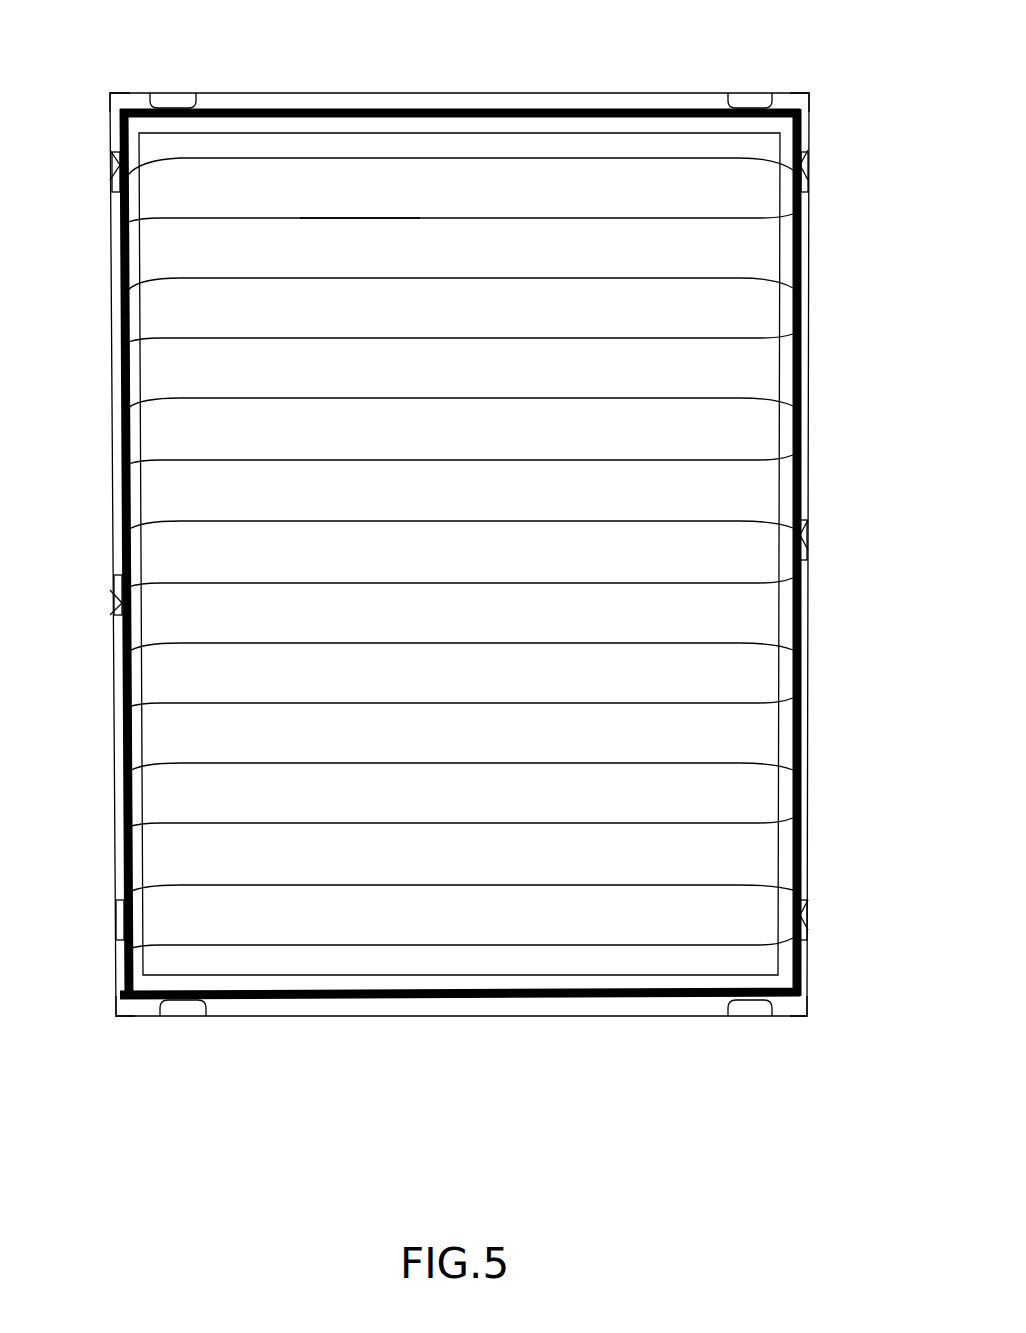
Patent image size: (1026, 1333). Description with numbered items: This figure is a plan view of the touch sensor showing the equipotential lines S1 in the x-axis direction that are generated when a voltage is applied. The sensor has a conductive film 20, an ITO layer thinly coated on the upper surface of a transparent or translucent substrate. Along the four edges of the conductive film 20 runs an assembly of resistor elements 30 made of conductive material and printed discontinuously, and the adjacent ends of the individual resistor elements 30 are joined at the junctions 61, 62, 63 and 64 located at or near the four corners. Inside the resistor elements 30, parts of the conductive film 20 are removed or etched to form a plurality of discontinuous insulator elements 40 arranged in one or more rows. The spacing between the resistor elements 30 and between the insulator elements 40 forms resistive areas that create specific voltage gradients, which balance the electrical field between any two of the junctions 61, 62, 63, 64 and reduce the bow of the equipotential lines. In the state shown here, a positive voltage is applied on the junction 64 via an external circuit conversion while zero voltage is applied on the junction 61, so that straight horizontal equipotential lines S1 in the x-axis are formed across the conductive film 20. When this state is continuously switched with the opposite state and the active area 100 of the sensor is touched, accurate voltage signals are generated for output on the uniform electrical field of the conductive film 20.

The active area 100 is at (358, 442).
The conductive film 20 is at (582, 190).
The resistor elements 30 is at (490, 108).
The insulator elements 40 is at (463, 108).
The equipotential lines in the x-axis direction S1 is at (352, 218).
The junction 61 is at (805, 100).
The junction 62 is at (110, 108).
The junction 63 is at (805, 1010).
The junction 64 is at (122, 1000).